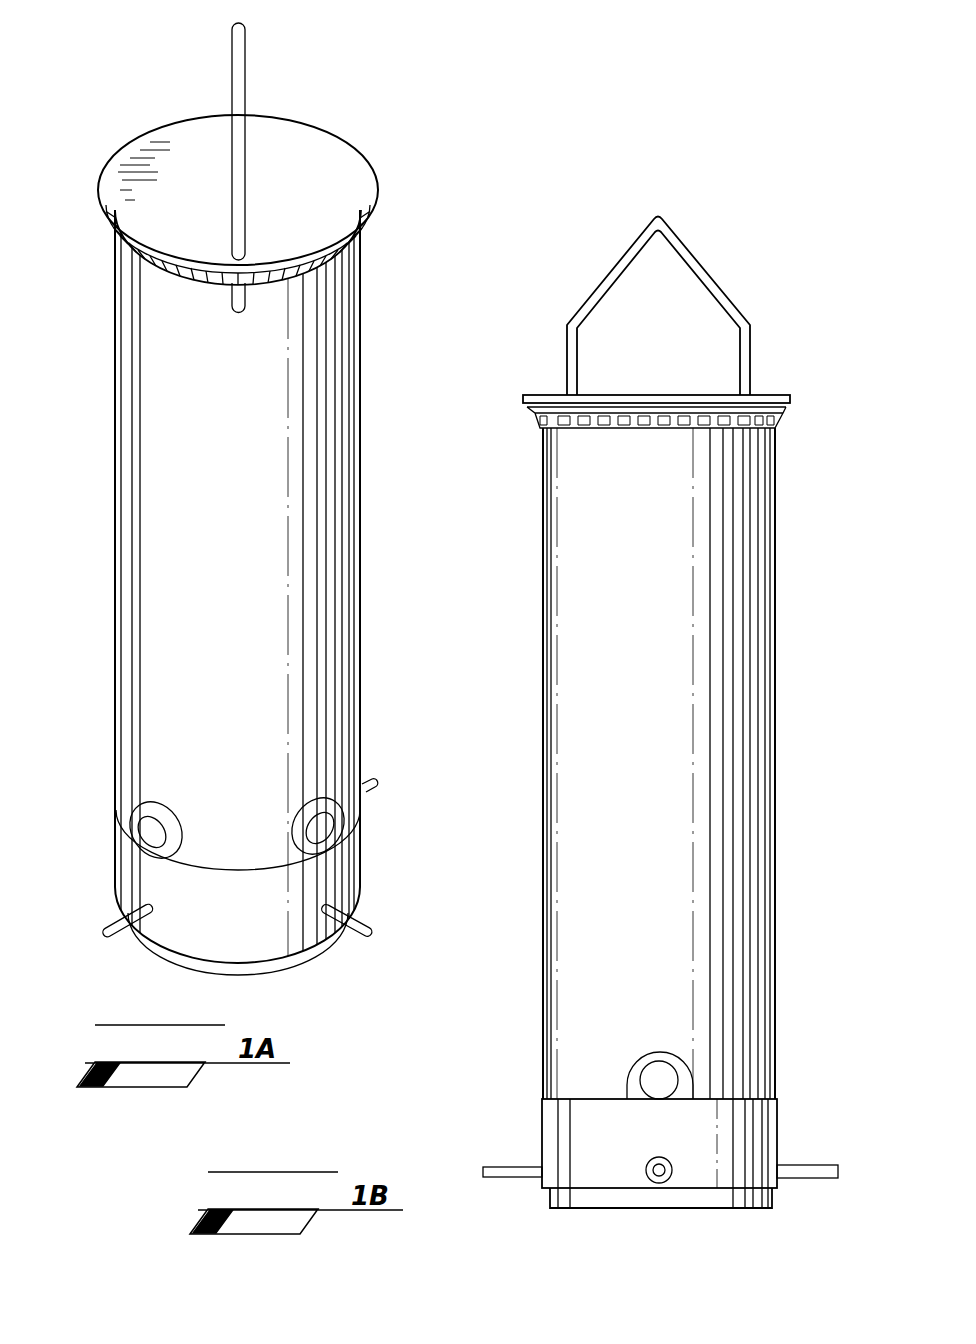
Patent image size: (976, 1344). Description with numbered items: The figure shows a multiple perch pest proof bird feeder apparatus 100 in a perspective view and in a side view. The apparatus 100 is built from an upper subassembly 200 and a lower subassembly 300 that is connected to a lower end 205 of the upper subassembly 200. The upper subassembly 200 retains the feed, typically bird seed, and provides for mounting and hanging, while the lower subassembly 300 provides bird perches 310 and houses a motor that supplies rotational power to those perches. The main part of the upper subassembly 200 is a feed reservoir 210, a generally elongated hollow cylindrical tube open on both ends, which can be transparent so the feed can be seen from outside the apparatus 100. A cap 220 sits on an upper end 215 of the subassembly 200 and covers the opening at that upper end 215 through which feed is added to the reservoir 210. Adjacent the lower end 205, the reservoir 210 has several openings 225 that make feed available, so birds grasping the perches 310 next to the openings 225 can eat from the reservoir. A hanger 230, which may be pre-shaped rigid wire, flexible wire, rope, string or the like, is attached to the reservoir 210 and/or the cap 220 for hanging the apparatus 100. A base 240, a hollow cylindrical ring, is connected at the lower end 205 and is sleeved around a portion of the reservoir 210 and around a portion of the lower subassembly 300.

In FIG. 1A, the multiple perch pest proof bird feeder apparatus 100 is at (130, 75).
In FIG. 1B, the upper subassembly 200 is at (508, 395).
In FIG. 1A, the lower end of the upper subassembly 205 is at (370, 798).
In FIG. 1B, the lower end of the upper subassembly 205 is at (782, 1097).
In FIG. 1A, the feed reservoir 210 is at (263, 516).
In FIG. 1B, the feed reservoir 210 is at (676, 731).
In FIG. 1A, the upper end of the subassembly 215 is at (370, 243).
In FIG. 1B, the upper end of the subassembly 215 is at (780, 434).
In FIG. 1A, the cap 220 is at (335, 186).
In FIG. 1B, the cap 220 is at (523, 396).
In FIG. 1A, the openings 225 is at (150, 825).
In FIG. 1B, the openings 225 is at (545, 1073).
In FIG. 1A, the hanger 230 is at (245, 65).
In FIG. 1B, the hanger 230 is at (718, 275).
In FIG. 1A, the base 240 is at (260, 911).
In FIG. 1B, the base 240 is at (680, 1145).
In FIG. 1B, the lower subassembly 300 is at (528, 1102).
In FIG. 1A, the bird perches 310 is at (140, 925).
In FIG. 1B, the bird perches 310 is at (512, 1180).